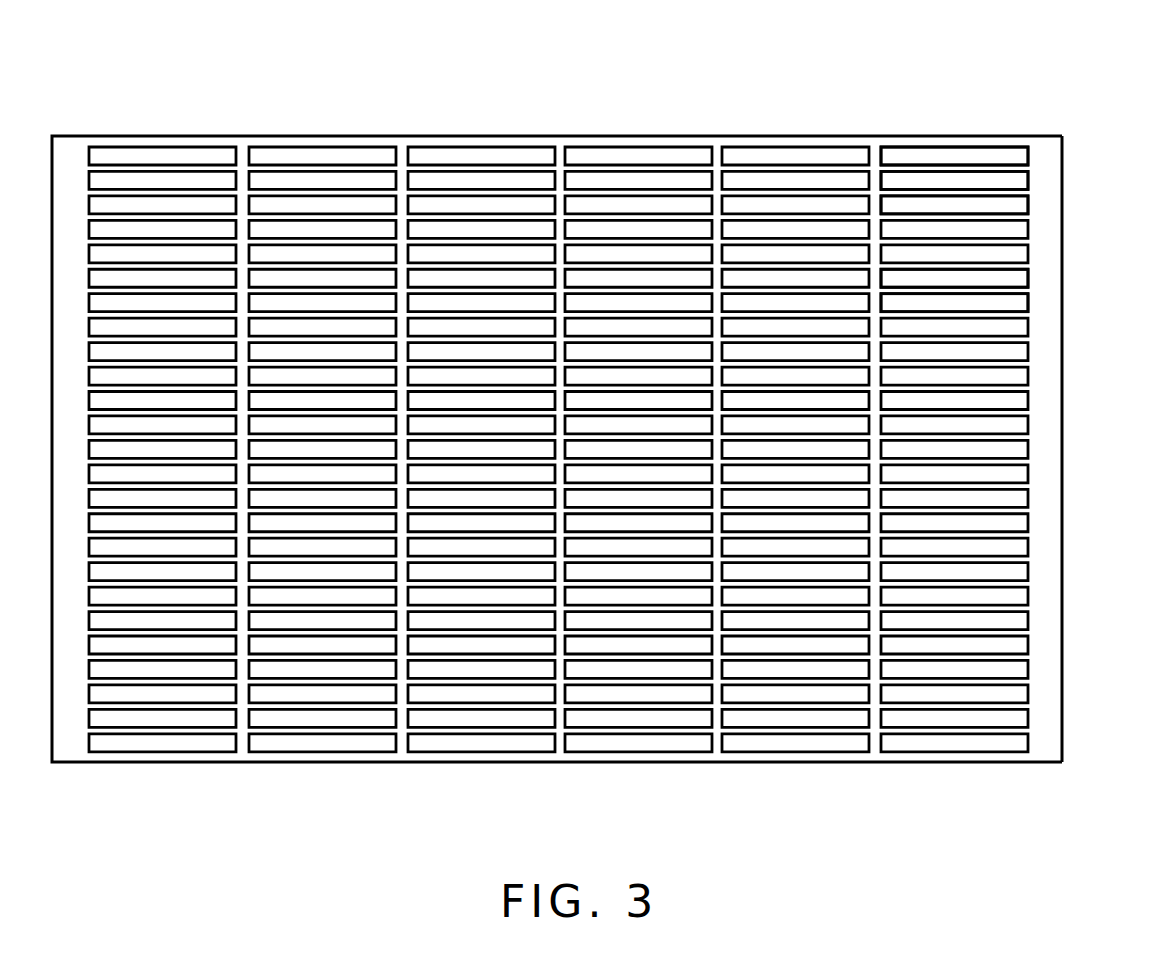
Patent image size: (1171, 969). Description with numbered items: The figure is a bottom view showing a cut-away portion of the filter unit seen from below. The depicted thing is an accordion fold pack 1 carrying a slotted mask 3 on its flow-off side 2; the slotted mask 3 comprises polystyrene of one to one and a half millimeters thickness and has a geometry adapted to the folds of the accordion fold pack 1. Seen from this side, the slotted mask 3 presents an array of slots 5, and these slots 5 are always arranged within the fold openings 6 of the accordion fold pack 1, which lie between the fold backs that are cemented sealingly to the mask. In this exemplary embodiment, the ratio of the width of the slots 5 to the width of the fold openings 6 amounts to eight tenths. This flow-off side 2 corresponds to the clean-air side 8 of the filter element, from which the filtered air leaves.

The accordion fold pack 1 is at (1003, 150).
The flow-off side 2 is at (1030, 521).
The slotted mask 3 is at (945, 167).
The slots 5 is at (908, 203).
The fold openings 6 is at (944, 304).
The clean-air side 8 is at (1047, 412).